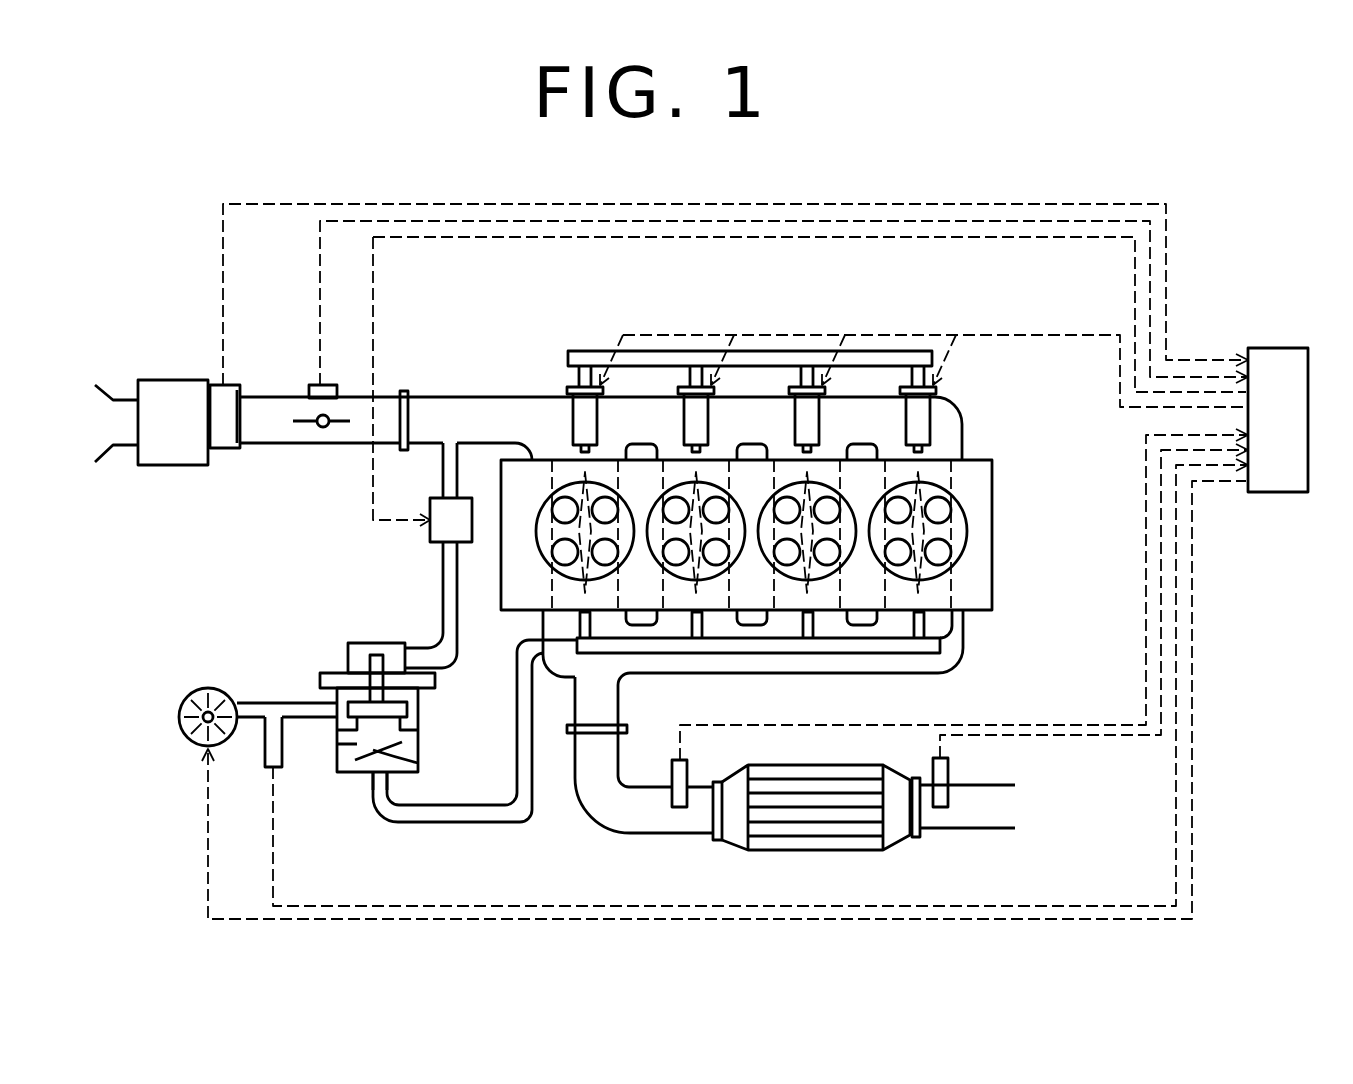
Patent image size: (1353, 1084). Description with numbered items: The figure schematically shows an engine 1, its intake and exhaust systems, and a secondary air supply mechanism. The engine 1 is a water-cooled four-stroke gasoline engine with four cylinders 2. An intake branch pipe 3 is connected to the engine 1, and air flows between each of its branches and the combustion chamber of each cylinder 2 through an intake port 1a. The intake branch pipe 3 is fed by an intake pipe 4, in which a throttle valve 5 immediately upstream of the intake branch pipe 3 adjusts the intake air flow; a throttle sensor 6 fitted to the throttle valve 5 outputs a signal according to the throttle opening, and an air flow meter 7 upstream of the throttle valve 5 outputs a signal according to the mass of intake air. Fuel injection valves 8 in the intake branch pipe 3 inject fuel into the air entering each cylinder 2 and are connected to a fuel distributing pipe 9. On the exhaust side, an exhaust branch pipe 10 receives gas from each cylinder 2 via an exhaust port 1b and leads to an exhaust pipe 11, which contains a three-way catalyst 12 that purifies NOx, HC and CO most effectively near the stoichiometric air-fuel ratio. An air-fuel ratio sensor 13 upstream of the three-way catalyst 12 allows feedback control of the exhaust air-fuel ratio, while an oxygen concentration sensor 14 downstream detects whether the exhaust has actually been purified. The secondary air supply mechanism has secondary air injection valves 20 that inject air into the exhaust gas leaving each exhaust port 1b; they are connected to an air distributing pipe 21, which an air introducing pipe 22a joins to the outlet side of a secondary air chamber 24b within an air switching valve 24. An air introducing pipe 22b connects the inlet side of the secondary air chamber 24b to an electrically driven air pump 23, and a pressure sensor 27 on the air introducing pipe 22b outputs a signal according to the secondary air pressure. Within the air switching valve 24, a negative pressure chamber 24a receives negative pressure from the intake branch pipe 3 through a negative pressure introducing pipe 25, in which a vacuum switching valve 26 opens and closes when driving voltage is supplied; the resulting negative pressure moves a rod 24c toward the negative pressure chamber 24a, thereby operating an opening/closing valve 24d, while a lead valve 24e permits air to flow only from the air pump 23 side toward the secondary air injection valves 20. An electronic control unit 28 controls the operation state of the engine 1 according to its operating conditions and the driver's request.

The engine 1 is at (992, 545).
The intake port 1a is at (955, 468).
The exhaust port 1b is at (950, 578).
The cylinder 2 is at (965, 513).
The intake branch pipe 3 is at (427, 397).
The intake pipe 4 is at (277, 444).
The throttle valve 5 is at (323, 428).
The throttle sensor 6 is at (315, 384).
The air flow meter 7 is at (220, 384).
The fuel injection valve 8 is at (930, 421).
The fuel distributing pipe 9 is at (586, 351).
The exhaust branch pipe 10 is at (963, 630).
The exhaust pipe 11 is at (698, 833).
The three-way catalyst 12 is at (843, 852).
The air-fuel ratio sensor 13 is at (678, 808).
The oxygen concentration sensor 14 is at (948, 772).
The secondary air injection valve 20 is at (923, 626).
The air distributing pipe 21 is at (790, 655).
The air introducing pipe 22a is at (430, 822).
The air introducing pipe 22b is at (250, 702).
The air pump 23 is at (183, 703).
The air switching valve 24 is at (310, 656).
The negative pressure chamber 24a is at (383, 642).
The secondary air chamber 24b is at (348, 775).
The rod 24c is at (370, 663).
The opening/closing valve 24d is at (413, 710).
The lead valve 24e is at (380, 768).
The negative pressure introducing pipe 25 is at (443, 580).
The vacuum switching valve 26 is at (427, 535).
The pressure sensor 27 is at (262, 757).
The electronic control unit 28 is at (1283, 492).